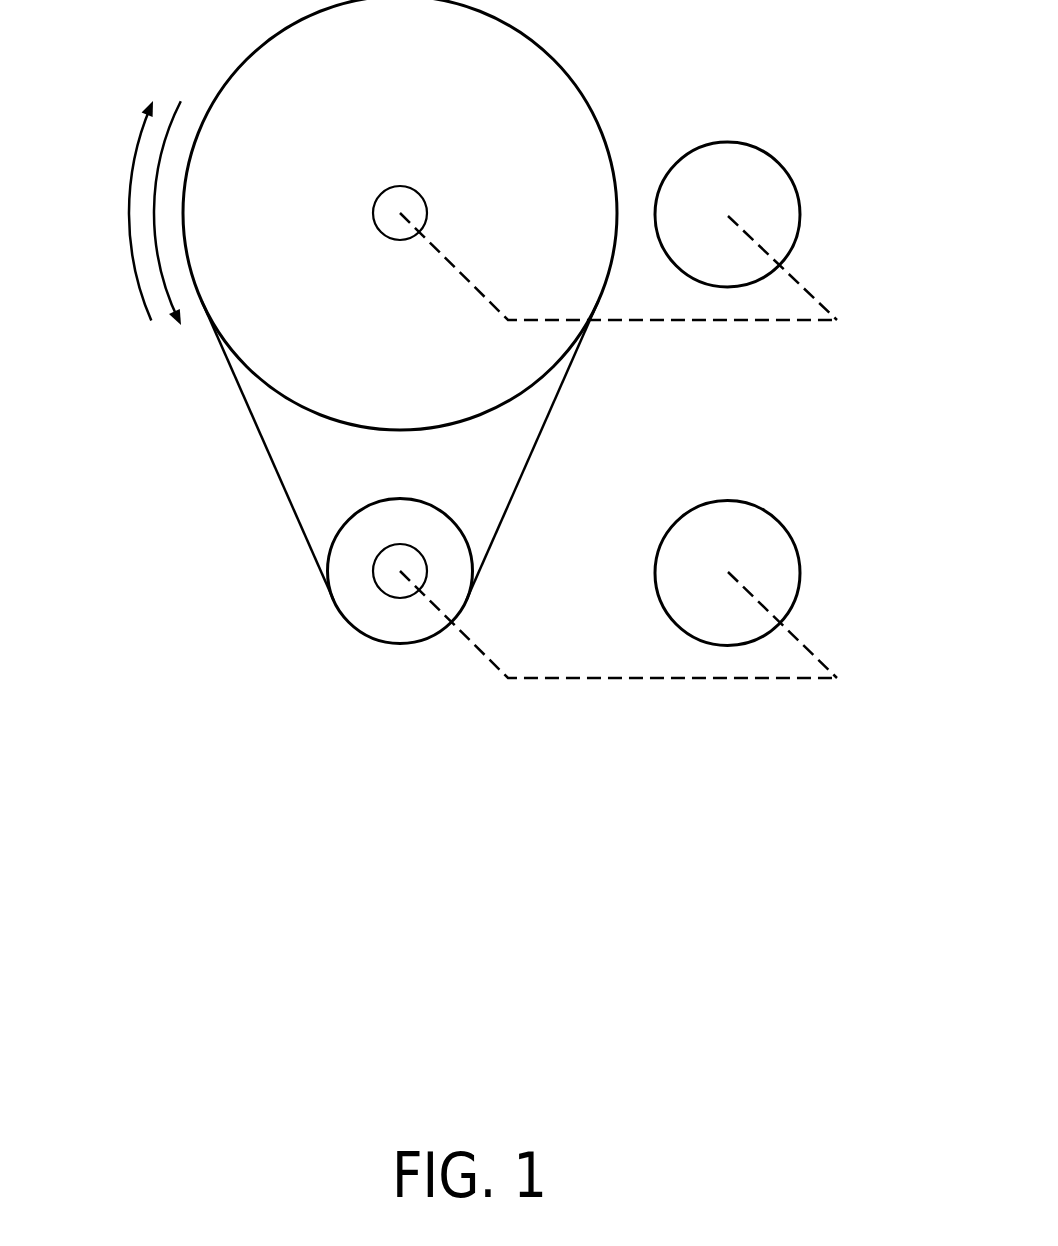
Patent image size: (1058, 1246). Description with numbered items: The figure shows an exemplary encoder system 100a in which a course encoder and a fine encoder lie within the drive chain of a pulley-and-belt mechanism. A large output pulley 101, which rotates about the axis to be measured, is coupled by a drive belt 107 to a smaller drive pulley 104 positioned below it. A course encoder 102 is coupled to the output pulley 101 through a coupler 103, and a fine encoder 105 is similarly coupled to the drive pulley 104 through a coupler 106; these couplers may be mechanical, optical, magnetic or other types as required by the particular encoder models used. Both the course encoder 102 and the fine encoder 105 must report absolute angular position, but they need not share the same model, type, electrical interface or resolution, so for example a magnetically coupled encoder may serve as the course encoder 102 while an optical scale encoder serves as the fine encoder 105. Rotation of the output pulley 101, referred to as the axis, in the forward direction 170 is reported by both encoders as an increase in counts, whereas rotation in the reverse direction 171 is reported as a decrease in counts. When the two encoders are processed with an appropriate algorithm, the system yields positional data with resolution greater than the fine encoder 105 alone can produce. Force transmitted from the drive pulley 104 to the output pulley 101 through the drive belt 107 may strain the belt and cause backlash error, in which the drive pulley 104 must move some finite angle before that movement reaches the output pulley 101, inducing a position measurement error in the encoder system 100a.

The encoder system 100a is at (739, 29).
The output pulley 101 is at (545, 70).
The course encoder 102 is at (792, 208).
The coupler 103 is at (822, 307).
The drive pulley 104 is at (427, 517).
The fine encoder 105 is at (783, 545).
The coupler 106 is at (822, 663).
The drive belt 107 is at (273, 470).
The forward direction 170 is at (137, 152).
The reverse direction 171 is at (158, 263).